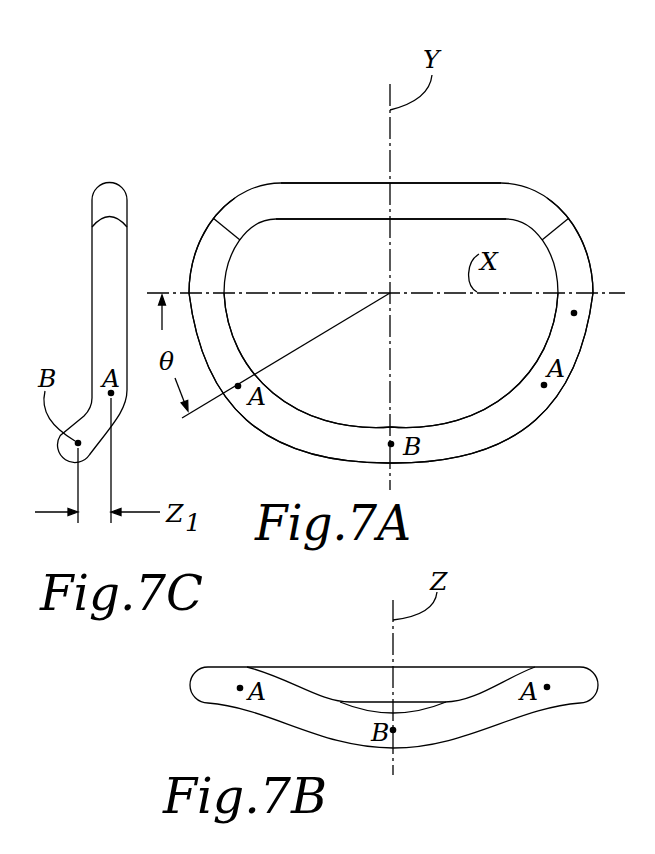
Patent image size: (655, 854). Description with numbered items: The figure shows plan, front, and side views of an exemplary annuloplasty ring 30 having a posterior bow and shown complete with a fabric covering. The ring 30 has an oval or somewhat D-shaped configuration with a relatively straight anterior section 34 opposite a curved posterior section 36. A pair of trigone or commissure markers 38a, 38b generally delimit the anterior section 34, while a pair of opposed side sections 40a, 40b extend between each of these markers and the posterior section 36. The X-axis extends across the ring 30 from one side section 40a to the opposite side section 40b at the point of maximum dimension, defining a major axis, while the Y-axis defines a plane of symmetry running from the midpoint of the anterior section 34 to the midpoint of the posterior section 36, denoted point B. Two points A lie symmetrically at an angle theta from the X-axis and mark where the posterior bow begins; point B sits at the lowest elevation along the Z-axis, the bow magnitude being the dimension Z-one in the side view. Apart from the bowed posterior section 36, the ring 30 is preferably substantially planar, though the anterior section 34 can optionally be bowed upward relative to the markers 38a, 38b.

In FIG. 7A, the annuloplasty ring 30 is at (536, 177).
In FIG. 7A, the anterior section 34 is at (293, 181).
In FIG. 7B, the anterior section 34 is at (440, 661).
In FIG. 7A, the posterior section 36 is at (491, 452).
In FIG. 7B, the posterior section 36 is at (452, 741).
In FIG. 7A, the trigone marker 38a is at (228, 224).
In FIG. 7A, the trigone marker 38b is at (553, 212).
In FIG. 7A, the side section 40a is at (188, 266).
In FIG. 7A, the side section 40b is at (597, 263).